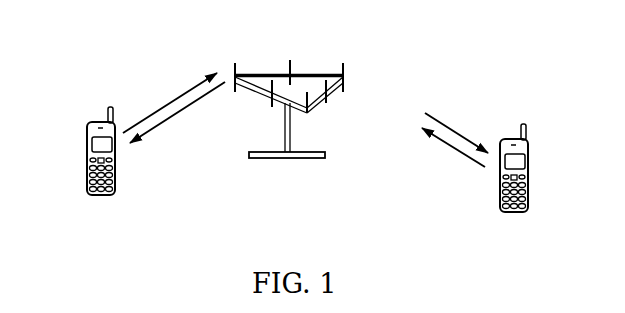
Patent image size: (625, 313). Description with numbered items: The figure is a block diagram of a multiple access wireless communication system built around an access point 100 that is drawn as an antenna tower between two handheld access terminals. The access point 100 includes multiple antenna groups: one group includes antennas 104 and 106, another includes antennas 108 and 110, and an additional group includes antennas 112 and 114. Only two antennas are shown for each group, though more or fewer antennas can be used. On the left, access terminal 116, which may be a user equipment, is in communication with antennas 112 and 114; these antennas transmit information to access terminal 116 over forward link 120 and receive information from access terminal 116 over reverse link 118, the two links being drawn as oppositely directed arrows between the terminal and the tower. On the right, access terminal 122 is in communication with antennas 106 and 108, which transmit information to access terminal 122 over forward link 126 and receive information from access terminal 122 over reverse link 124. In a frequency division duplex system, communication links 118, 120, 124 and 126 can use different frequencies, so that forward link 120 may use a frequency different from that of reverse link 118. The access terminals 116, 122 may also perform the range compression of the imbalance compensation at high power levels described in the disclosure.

The access point 100 is at (307, 117).
The antenna 104 is at (308, 113).
The antenna 106 is at (327, 102).
The antenna 108 is at (346, 83).
The antenna 110 is at (290, 63).
The antenna 112 is at (235, 70).
The antenna 114 is at (272, 107).
The access terminal 116 is at (87, 140).
The reverse link 118 is at (177, 95).
The forward link 120 is at (167, 118).
The access terminal 122 is at (528, 162).
The reverse link 124 is at (460, 153).
The forward link 126 is at (453, 132).